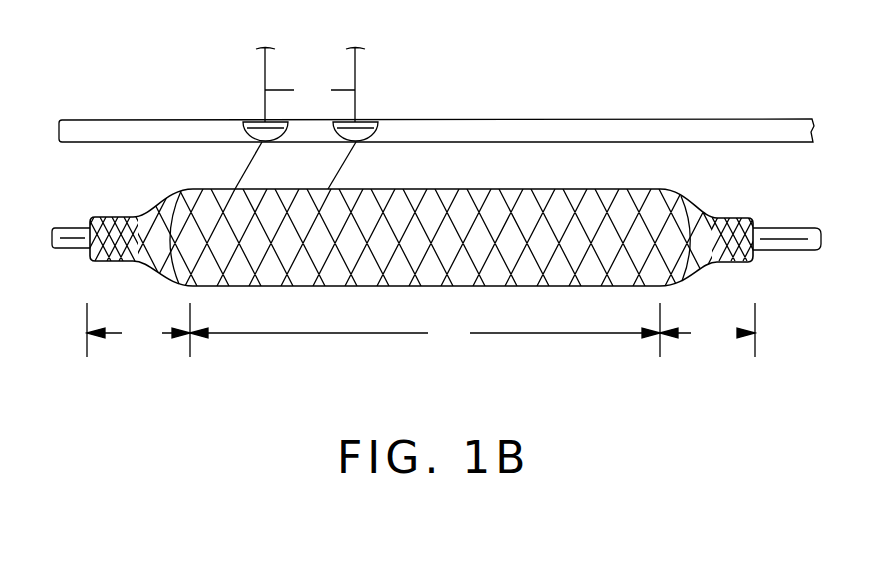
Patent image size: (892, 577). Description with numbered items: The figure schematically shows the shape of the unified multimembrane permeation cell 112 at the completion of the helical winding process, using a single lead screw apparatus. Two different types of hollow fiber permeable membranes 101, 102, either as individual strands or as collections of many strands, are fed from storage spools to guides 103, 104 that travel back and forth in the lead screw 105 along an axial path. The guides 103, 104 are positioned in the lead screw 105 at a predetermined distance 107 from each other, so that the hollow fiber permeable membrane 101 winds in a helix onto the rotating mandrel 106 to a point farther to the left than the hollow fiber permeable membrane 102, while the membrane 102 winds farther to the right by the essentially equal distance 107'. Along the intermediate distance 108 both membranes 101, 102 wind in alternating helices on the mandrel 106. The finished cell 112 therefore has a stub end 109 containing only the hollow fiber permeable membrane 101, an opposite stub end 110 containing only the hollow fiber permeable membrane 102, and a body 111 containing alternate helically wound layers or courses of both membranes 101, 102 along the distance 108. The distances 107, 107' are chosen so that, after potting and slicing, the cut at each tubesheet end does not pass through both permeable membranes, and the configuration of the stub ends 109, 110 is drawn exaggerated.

The hollow fiber permeable membrane 101 is at (262, 61).
The hollow fiber permeable membrane 102 is at (358, 62).
The guide 103 is at (252, 124).
The guide 104 is at (370, 124).
The lead screw 105 is at (746, 120).
The mandrel 106 is at (788, 228).
The distance 107 is at (221, 218).
The distance 107' is at (707, 330).
The distance 108 is at (425, 330).
The stub end 109 is at (112, 216).
The stub end 110 is at (720, 218).
The body 111 is at (568, 210).
The unified multimembrane permeation cell 112 is at (450, 157).